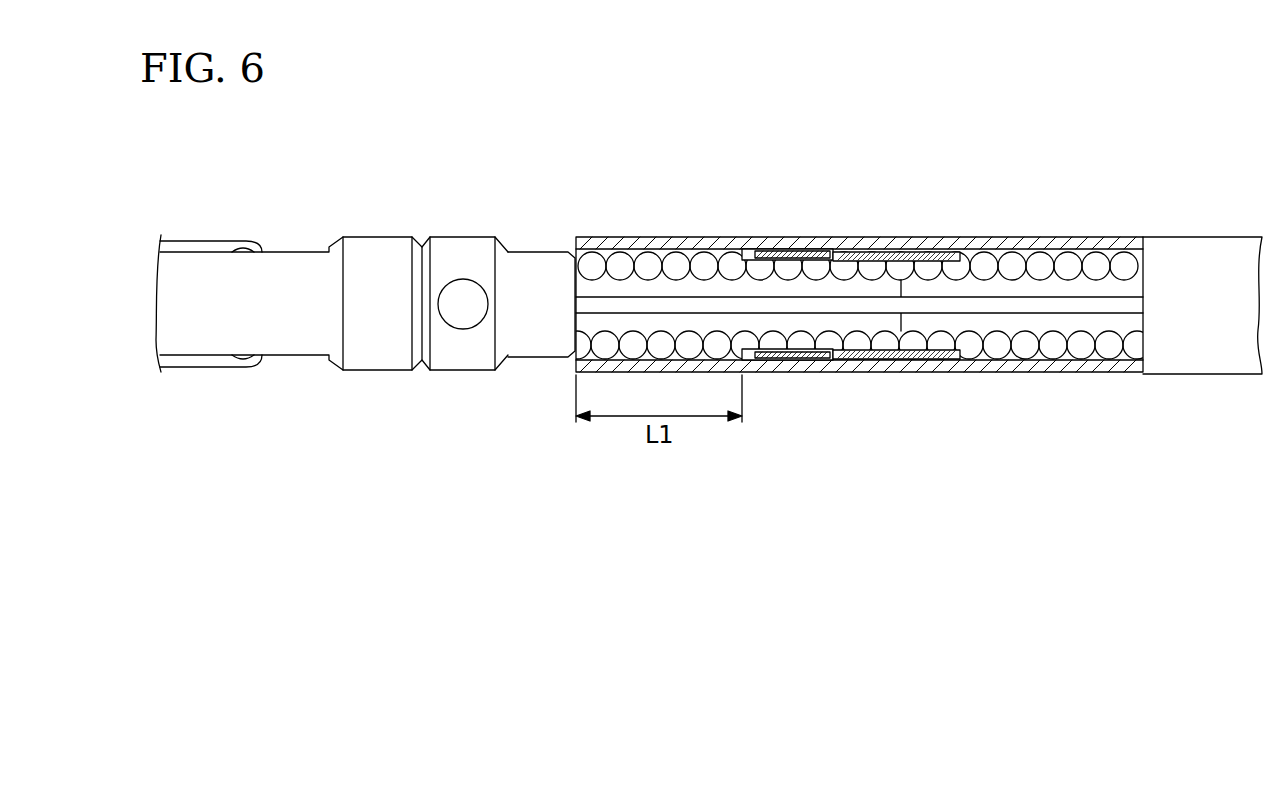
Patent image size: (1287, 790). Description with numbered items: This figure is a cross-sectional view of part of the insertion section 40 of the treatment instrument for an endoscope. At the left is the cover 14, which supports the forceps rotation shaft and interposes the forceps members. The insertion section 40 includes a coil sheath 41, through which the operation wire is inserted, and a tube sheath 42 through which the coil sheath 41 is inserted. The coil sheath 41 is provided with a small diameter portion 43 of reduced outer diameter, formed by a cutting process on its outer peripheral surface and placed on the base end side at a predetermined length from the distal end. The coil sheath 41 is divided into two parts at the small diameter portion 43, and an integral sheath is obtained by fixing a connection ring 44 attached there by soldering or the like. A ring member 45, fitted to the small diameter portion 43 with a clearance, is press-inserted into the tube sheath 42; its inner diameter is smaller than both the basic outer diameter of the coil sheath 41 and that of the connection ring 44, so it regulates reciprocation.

The cover 14 is at (528, 350).
The insertion section 40 is at (713, 203).
The coil sheath 41 is at (1093, 262).
The tube sheath 42 is at (1083, 373).
The small diameter portion 43 is at (808, 245).
The connection ring 44 is at (930, 250).
The ring member 45 is at (817, 359).